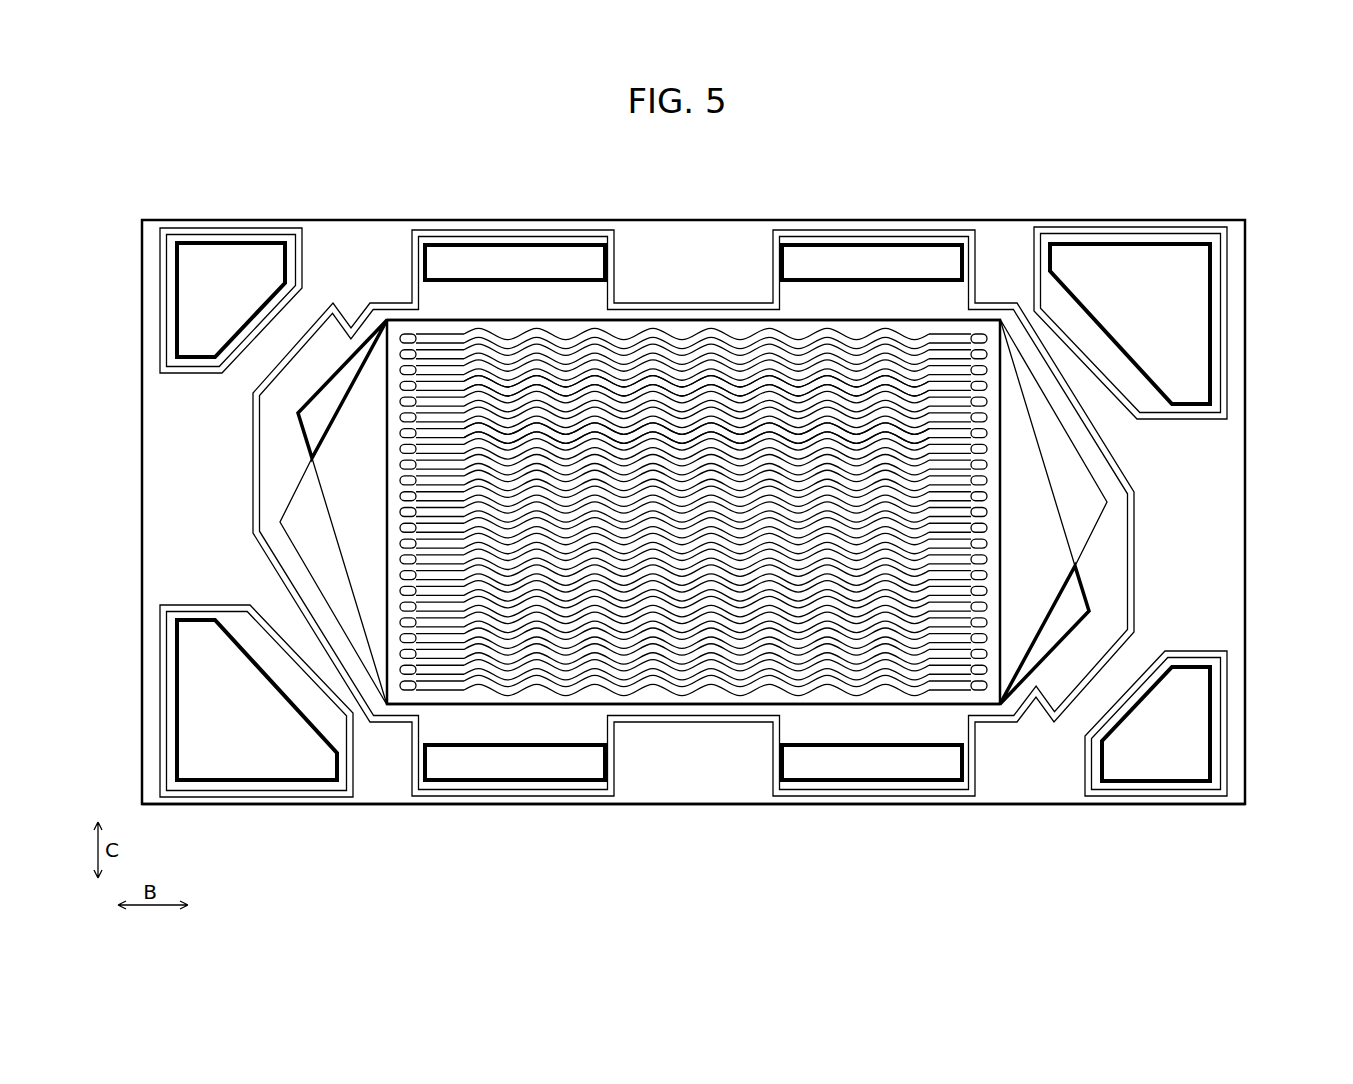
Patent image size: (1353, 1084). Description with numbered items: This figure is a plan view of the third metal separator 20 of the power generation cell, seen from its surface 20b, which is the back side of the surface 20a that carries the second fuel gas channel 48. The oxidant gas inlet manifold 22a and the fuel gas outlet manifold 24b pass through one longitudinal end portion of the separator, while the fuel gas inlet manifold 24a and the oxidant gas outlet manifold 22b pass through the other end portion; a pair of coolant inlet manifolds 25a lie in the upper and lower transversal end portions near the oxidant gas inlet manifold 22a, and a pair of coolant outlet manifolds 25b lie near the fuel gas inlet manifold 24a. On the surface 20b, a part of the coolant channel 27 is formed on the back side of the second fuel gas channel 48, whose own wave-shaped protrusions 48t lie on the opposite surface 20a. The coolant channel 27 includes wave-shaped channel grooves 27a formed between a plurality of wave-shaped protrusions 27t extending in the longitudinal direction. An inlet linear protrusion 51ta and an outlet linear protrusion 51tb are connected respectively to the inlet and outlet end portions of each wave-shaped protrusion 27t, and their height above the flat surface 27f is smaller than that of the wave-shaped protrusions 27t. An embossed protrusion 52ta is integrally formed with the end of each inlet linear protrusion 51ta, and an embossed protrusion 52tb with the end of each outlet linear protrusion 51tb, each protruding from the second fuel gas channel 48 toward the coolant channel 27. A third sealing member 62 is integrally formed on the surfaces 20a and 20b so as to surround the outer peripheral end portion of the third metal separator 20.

The third metal separator 20 is at (338, 156).
The surface of the third metal separator 20a is at (1218, 546).
The surface of the third metal separator 20b is at (1238, 567).
The oxidant gas inlet manifold 22a is at (1120, 262).
The oxidant gas outlet manifold 22b is at (212, 745).
The fuel gas inlet manifold 24a is at (208, 262).
The fuel gas outlet manifold 24b is at (1148, 762).
The coolant inlet manifold 25a is at (840, 262).
The coolant outlet manifold 25b is at (505, 262).
The coolant channel 27 is at (703, 492).
The wave-shaped channel grooves 27a is at (766, 355).
The wave-shaped protrusions 27t is at (691, 437).
The flat surface 27f is at (445, 697).
The second fuel gas channel 48 is at (693, 507).
The wave-shaped protrusions 48t is at (592, 355).
The inlet linear protrusion 51ta is at (945, 338).
The outlet linear protrusion 51tb is at (448, 338).
The embossed protrusion 52ta is at (977, 338).
The embossed protrusion 52tb is at (406, 338).
The third sealing member 62 is at (603, 805).